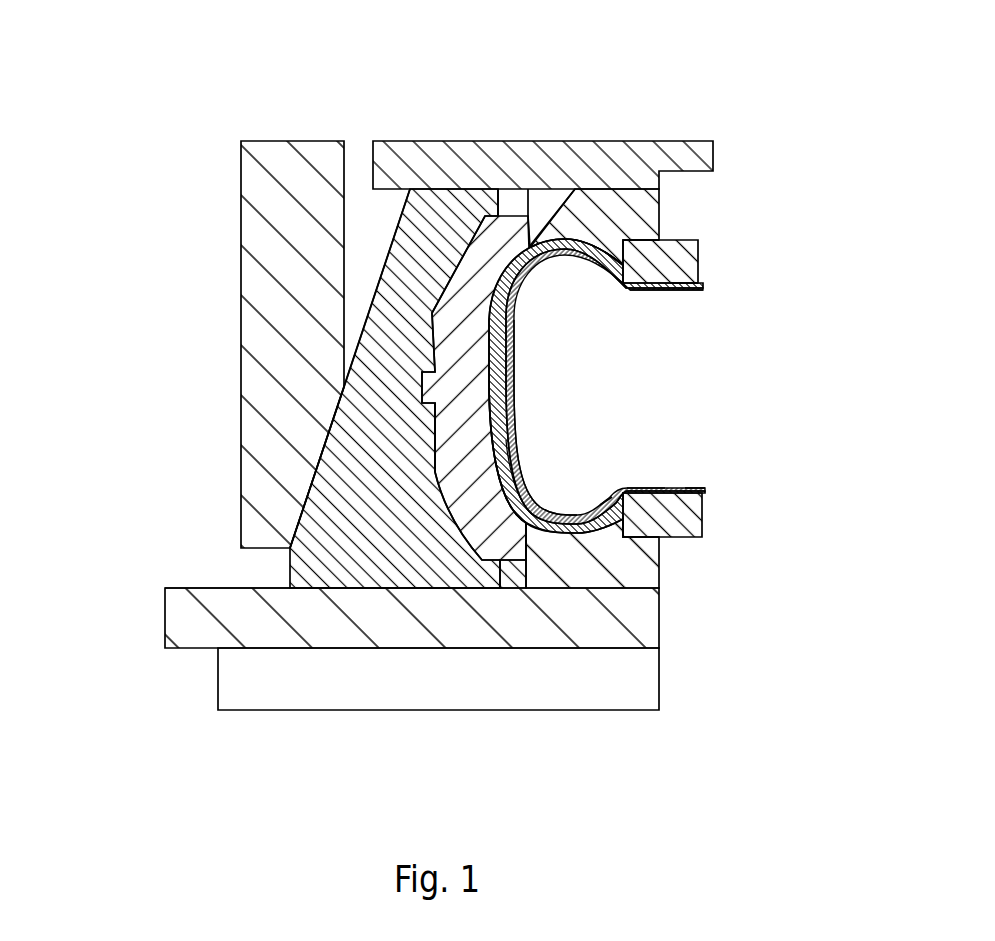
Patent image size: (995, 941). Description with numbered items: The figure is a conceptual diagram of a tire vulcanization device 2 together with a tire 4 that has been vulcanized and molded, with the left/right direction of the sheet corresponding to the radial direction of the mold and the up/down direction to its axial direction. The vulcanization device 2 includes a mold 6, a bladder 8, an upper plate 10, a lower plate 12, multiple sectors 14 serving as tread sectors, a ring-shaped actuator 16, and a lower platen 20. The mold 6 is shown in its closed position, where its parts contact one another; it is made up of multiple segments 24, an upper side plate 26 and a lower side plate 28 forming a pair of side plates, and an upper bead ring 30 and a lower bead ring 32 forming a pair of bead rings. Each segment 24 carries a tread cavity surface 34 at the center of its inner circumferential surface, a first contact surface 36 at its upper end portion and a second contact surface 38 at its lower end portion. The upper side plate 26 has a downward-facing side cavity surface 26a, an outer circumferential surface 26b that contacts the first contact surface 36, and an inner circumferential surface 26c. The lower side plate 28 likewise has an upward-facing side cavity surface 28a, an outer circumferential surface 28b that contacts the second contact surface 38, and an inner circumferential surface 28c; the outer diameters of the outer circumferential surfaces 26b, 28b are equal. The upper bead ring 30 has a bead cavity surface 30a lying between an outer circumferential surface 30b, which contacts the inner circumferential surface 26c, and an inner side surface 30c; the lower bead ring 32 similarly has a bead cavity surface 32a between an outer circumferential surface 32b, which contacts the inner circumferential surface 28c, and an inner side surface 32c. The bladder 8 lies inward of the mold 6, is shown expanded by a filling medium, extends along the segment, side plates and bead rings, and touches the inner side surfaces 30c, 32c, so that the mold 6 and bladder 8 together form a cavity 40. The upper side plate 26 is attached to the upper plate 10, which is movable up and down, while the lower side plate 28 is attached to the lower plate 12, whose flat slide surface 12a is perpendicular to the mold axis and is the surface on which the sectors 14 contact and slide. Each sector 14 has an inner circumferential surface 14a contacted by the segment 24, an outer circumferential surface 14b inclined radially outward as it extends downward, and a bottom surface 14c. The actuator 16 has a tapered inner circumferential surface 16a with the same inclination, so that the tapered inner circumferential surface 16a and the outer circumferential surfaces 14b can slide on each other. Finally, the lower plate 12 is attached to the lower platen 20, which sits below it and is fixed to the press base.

The vulcanization device 2 is at (412, 401).
The tire 4 is at (513, 363).
The mold 6 is at (516, 430).
The bladder 8 is at (520, 457).
The upper plate 10 is at (714, 148).
The lower plate 12 is at (661, 624).
The slide surface 12a is at (225, 590).
The sector 14 is at (320, 536).
The inner circumferential surface 14a is at (437, 440).
The outer circumferential surface 14b is at (400, 244).
The bottom surface 14c is at (378, 590).
The actuator 16 is at (262, 343).
The tapered inner circumferential surface 16a is at (312, 494).
The lower platen 20 is at (661, 679).
The segment 24 is at (477, 323).
The upper side plate 26 is at (645, 212).
The side cavity surface 26a is at (574, 257).
The outer circumferential surface 26b is at (508, 188).
The inner circumferential surface 26c is at (638, 240).
The lower side plate 28 is at (647, 565).
The side cavity surface 28a is at (568, 514).
The outer circumferential surface 28b is at (512, 570).
The inner circumferential surface 28c is at (682, 497).
The upper bead ring 30 is at (690, 265).
The bead cavity surface 30a is at (653, 293).
The outer circumferential surface 30b is at (613, 287).
The inner side surface 30c is at (682, 291).
The lower bead ring 32 is at (690, 513).
The bead cavity surface 32a is at (641, 489).
The outer circumferential surface 32b is at (607, 491).
The inner side surface 32c is at (703, 488).
The tread cavity surface 34 is at (518, 500).
The first contact surface 36 is at (558, 213).
The second contact surface 38 is at (550, 545).
The cavity 40 is at (513, 395).